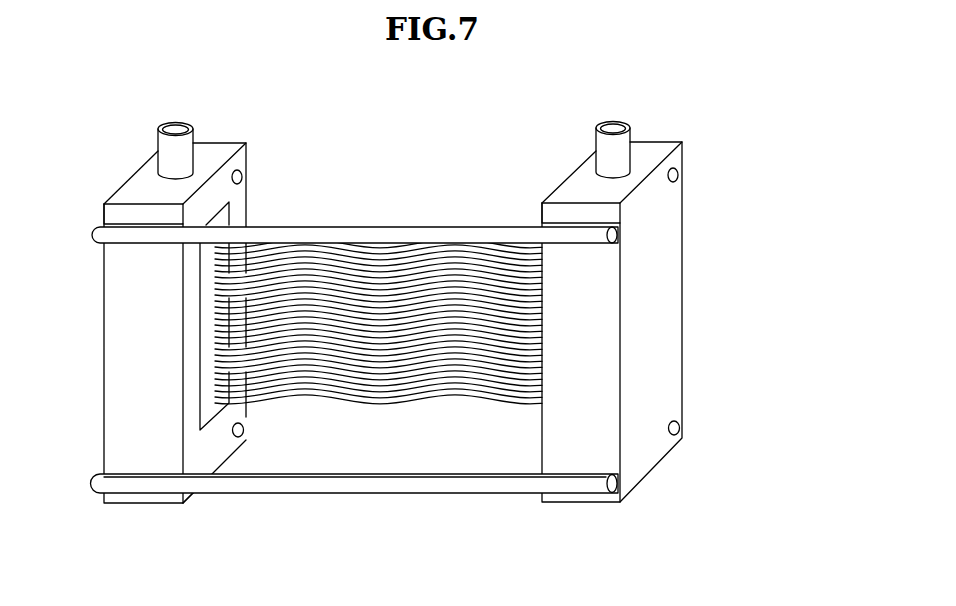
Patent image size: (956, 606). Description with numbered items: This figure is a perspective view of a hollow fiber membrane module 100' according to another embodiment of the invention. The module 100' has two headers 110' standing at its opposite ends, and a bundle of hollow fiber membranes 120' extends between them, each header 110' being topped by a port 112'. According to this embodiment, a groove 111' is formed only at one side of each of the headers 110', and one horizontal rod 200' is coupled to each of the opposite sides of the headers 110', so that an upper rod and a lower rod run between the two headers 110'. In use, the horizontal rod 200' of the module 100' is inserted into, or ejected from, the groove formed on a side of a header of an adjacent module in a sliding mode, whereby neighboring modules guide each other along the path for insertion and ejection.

The hollow fiber membrane module 100' is at (450, 309).
The header 110' is at (393, 277).
The groove 111' is at (494, 276).
The connection pipe 112' is at (350, 130).
The heat exchange tube 120' is at (378, 282).
The horizontal rod 200' is at (355, 363).